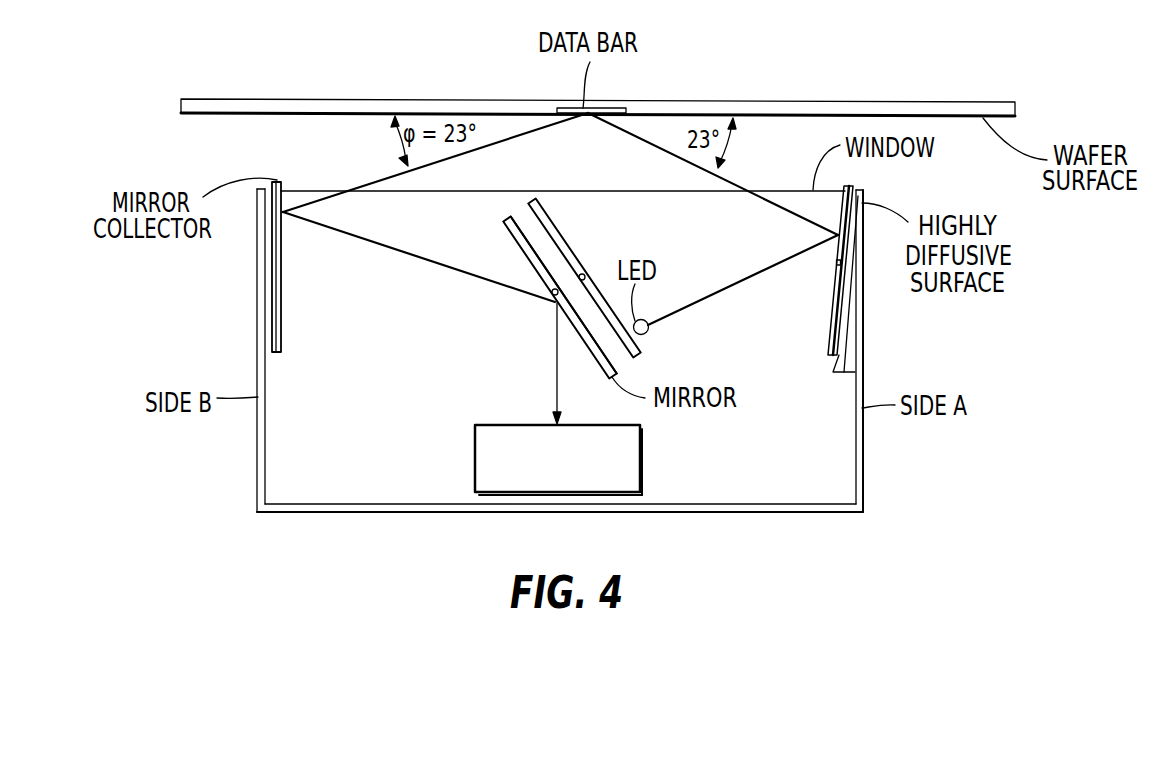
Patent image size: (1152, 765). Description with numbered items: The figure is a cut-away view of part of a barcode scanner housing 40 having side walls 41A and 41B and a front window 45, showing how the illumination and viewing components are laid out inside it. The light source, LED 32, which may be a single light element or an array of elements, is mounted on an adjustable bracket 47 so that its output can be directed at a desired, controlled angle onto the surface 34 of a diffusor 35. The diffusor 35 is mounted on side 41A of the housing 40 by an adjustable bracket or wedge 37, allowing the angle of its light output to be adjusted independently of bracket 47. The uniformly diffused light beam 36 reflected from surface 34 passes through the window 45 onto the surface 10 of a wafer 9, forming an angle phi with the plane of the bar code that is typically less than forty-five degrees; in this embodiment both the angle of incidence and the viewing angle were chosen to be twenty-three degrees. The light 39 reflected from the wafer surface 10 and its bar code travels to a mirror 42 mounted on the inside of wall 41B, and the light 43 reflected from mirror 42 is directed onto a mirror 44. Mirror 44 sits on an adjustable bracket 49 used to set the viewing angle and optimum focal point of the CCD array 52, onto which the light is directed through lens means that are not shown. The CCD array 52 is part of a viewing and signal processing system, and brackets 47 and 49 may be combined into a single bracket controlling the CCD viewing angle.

The wafer 9 is at (256, 98).
The wafer surface 10 is at (218, 114).
The reflected light 39 is at (380, 178).
The diffused light beam 36 is at (663, 150).
The reflected light from mirror 43 is at (382, 247).
The diffusor 35 is at (837, 293).
The mirror 42 is at (278, 353).
The mirror 44 is at (516, 244).
The adjustable bracket 49 is at (504, 219).
The adjustable bracket 47 is at (530, 206).
The LED 32 is at (648, 336).
The diffusor surface 34 is at (830, 337).
The adjustable bracket (wedge) 37 is at (845, 375).
The front window 45 is at (805, 190).
The side wall 41A is at (862, 450).
The side wall 41B is at (257, 452).
The scanner housing 40 is at (877, 495).
The CCD array 52 is at (475, 458).